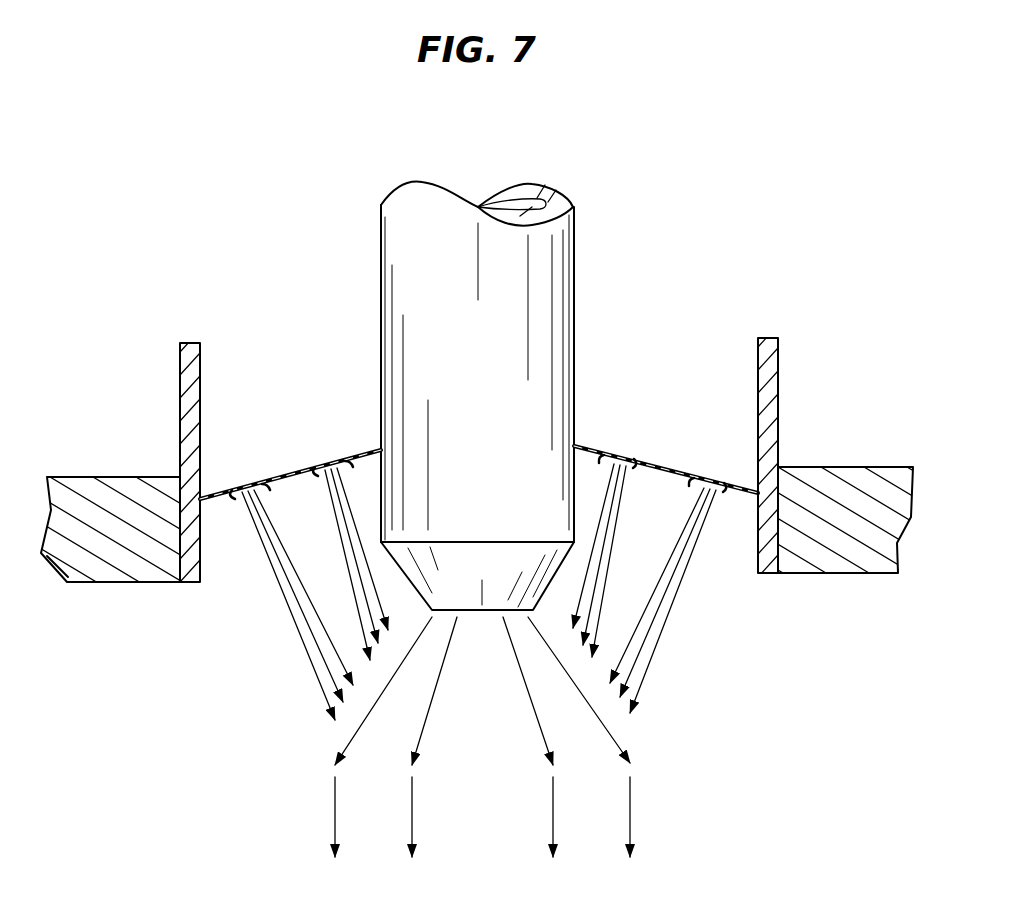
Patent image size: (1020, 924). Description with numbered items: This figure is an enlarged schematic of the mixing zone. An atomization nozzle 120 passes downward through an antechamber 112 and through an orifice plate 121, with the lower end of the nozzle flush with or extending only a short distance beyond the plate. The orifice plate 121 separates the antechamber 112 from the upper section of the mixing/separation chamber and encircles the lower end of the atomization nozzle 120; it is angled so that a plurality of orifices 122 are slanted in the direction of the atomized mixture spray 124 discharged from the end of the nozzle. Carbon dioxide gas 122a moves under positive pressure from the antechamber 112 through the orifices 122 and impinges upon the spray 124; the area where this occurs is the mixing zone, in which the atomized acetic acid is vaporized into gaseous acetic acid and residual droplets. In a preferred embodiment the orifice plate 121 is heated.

The antechamber 112 is at (780, 378).
The atomization nozzle 120 is at (577, 357).
The orifice plate 121 is at (352, 450).
The orifices 122 is at (331, 468).
The carbon dioxide gas 122a is at (350, 566).
The atomized mixture spray 124 is at (532, 700).